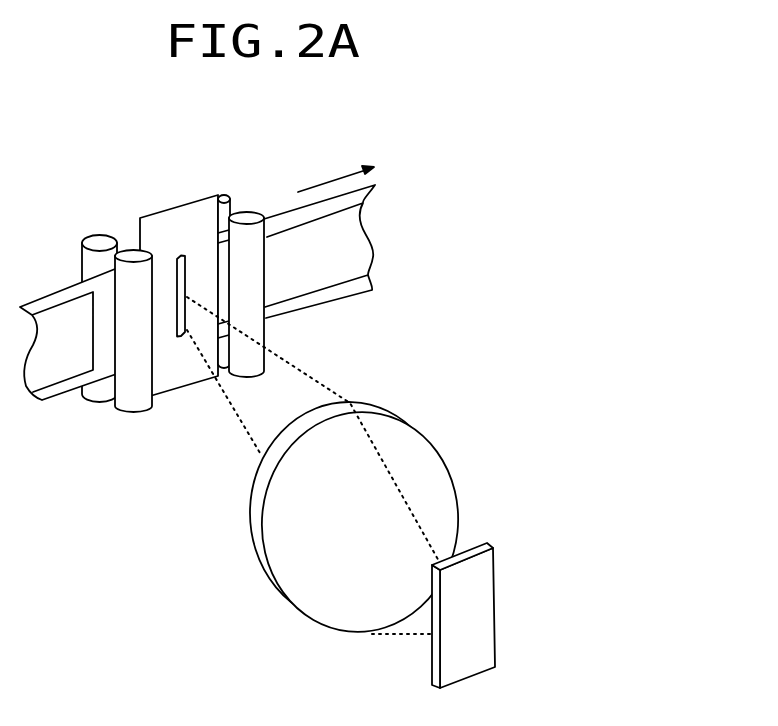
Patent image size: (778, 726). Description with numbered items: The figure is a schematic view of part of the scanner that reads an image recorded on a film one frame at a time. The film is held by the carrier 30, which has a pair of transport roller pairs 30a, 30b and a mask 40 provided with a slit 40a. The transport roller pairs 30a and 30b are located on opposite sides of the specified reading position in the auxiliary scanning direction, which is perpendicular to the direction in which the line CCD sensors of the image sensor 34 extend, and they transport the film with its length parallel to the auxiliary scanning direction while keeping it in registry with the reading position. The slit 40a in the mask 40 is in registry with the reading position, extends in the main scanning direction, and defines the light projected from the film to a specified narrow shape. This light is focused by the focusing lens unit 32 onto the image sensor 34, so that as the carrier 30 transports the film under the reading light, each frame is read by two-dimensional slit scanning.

The carrier 30 is at (219, 313).
The transport roller pair 30a is at (132, 402).
The transport roller pair 30b is at (247, 301).
The mask 40 is at (203, 296).
The slit 40a is at (181, 256).
The focusing lens unit 32 is at (410, 447).
The image sensor 34 is at (477, 607).